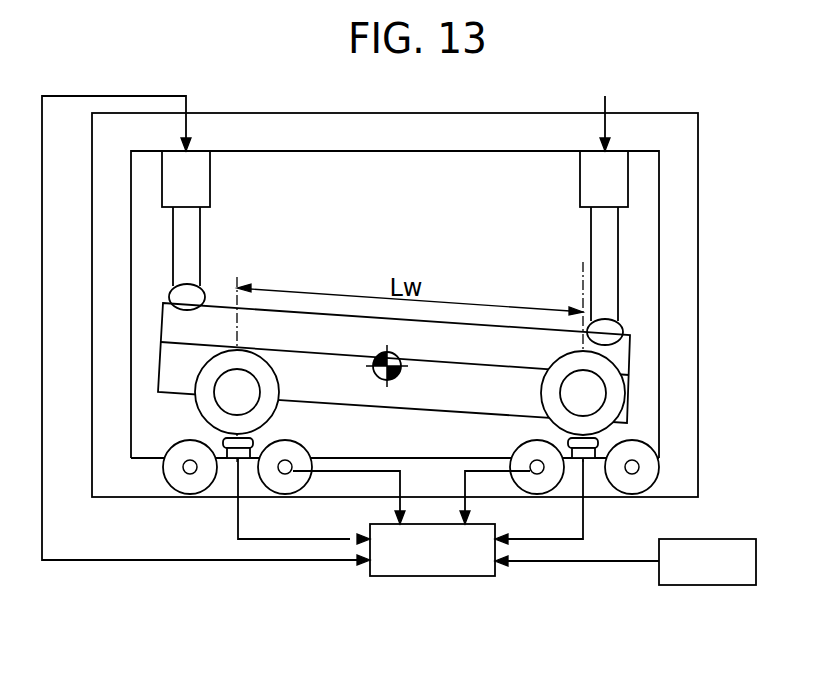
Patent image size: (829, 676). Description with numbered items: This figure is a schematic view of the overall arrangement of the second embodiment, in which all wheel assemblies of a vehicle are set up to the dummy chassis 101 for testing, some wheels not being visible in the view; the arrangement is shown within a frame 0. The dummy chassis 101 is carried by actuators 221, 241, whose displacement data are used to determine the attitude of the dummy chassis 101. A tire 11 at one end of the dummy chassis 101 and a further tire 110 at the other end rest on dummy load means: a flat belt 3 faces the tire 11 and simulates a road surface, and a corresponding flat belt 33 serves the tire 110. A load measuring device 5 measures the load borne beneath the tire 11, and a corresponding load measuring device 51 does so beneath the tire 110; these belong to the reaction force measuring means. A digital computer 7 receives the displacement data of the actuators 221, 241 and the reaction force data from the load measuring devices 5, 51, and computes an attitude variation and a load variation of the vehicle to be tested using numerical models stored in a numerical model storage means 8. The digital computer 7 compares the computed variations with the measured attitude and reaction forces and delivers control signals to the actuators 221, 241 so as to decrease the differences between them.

The frame 0 is at (698, 147).
The first actuator 221 is at (210, 187).
The second actuator 241 is at (580, 178).
The dummy chassis 101 is at (212, 302).
The tire 11 is at (270, 418).
The second wheel 110 is at (617, 398).
The flat belt 3 is at (173, 468).
The support rollers 33 is at (653, 475).
The load measuring device 5 is at (231, 458).
The second bearing / load sensor 51 is at (589, 447).
The digital computer 7 is at (420, 577).
The numerical model storage means 8 is at (747, 538).